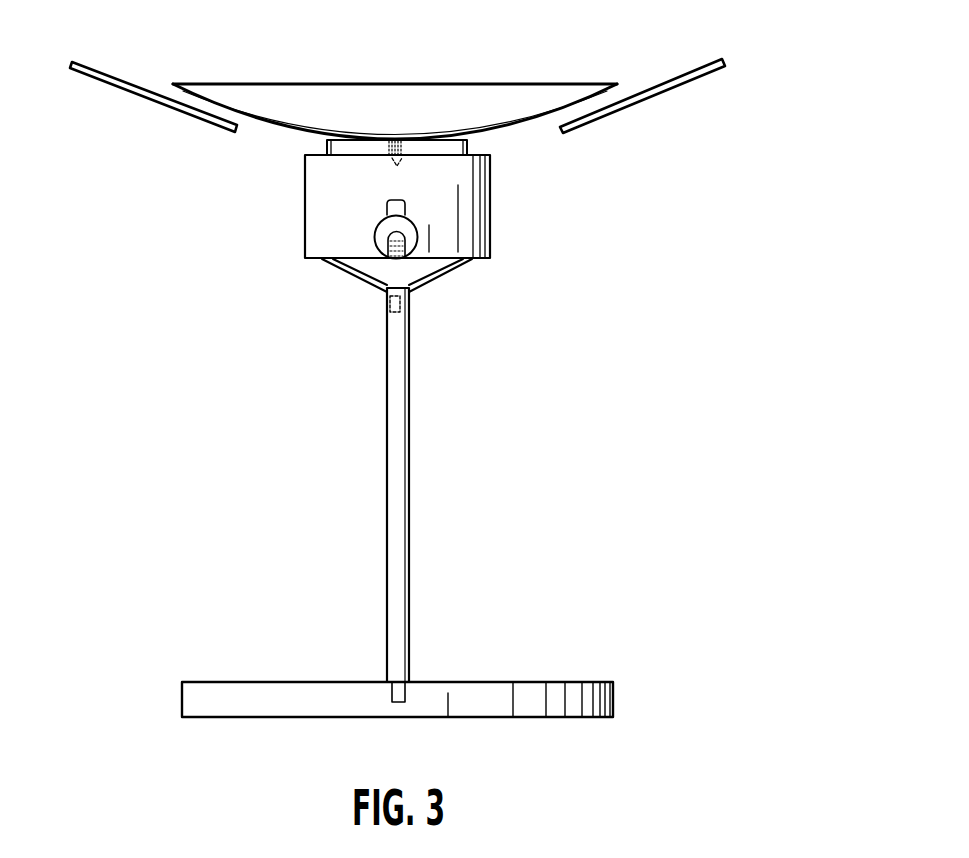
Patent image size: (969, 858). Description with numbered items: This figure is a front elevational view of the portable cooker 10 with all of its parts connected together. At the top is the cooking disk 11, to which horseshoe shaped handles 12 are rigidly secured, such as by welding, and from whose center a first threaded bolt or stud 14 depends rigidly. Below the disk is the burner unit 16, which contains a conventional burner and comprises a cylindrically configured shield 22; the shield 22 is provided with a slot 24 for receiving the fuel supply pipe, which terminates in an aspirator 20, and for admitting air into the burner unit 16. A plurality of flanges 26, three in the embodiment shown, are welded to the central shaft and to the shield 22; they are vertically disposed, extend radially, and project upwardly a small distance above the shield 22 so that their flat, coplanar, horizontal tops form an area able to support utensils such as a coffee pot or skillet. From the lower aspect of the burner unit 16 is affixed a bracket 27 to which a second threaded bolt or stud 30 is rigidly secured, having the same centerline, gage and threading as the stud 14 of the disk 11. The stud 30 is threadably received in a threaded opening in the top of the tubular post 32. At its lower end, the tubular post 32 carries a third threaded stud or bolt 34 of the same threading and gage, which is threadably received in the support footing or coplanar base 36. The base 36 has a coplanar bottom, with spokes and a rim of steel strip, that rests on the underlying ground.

The portable cooker 10 is at (230, 434).
The cooking disk 11 is at (533, 84).
The horseshoe shaped handles 12 is at (192, 117).
The first threaded bolt or stud 14 is at (397, 166).
The burner unit 16 is at (456, 202).
The aspirator 20 is at (382, 236).
The cylindrically configured shield 22 is at (493, 218).
The slot 24 is at (403, 210).
The flanges 26 is at (274, 172).
The bracket 27 is at (447, 274).
The second threaded bolt or stud 30 is at (388, 309).
The tubular post 32 is at (412, 470).
The third threaded stud or bolt 34 is at (413, 689).
The support footing or coplanar base 36 is at (614, 694).